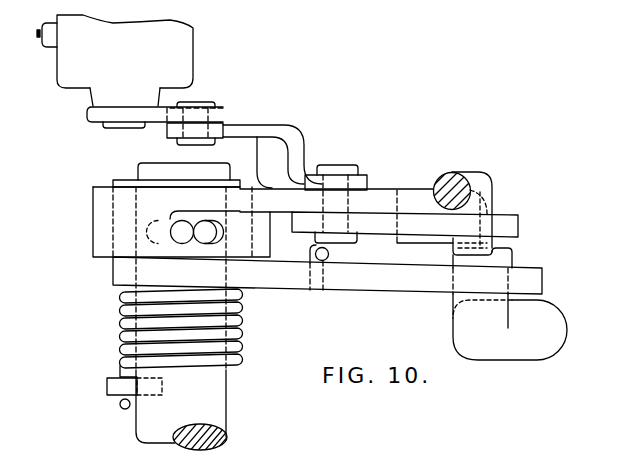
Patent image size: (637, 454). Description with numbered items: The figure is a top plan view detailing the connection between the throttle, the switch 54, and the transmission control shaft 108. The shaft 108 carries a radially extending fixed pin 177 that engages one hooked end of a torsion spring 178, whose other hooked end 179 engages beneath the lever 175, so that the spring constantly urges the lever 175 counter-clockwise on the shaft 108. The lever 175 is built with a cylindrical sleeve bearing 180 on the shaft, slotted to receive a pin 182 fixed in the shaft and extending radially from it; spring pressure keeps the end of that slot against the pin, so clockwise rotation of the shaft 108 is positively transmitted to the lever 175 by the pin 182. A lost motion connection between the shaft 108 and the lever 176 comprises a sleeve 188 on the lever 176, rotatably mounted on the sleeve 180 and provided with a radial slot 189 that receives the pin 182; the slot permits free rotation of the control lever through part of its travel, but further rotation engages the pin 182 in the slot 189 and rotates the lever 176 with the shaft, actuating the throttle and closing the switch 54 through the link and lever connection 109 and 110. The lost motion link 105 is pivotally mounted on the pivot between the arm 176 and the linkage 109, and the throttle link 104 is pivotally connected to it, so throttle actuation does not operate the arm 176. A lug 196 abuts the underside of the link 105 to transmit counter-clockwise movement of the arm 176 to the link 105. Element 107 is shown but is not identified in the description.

The switch 54 is at (194, 51).
The lever connection 110 is at (151, 117).
The link connection 109 is at (268, 126).
The cylindrical sleeve bearing 180 is at (121, 178).
The lever 176 is at (377, 198).
The sleeve 188 is at (96, 225).
The pin 182 is at (180, 230).
The radial slot 189 is at (203, 228).
The throttle linkage 104 is at (455, 153).
The lost motion link 105 is at (507, 220).
The lug 196 is at (413, 243).
The hooked end 179 is at (322, 291).
The lever 175 is at (402, 283).
The cylinder 107 is at (552, 316).
The torsion spring 178 is at (244, 333).
The fixed pin 177 is at (110, 392).
The shaft 108 is at (224, 406).